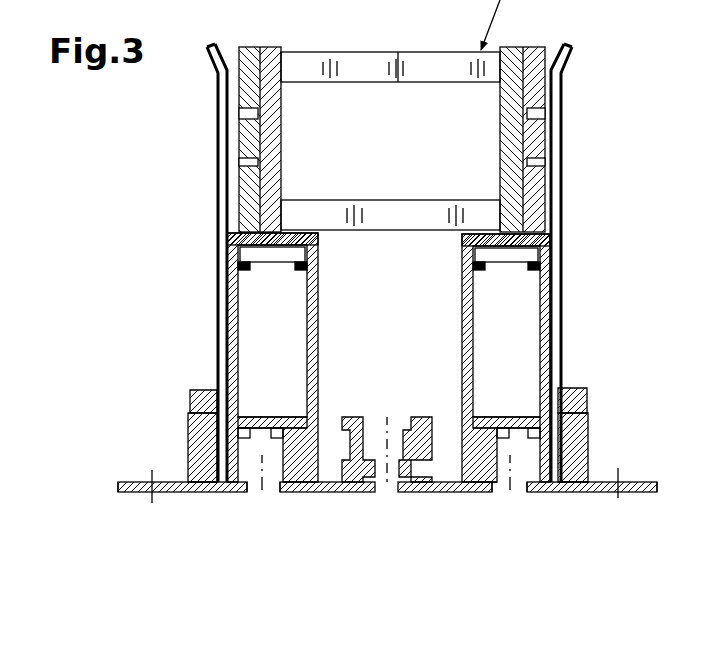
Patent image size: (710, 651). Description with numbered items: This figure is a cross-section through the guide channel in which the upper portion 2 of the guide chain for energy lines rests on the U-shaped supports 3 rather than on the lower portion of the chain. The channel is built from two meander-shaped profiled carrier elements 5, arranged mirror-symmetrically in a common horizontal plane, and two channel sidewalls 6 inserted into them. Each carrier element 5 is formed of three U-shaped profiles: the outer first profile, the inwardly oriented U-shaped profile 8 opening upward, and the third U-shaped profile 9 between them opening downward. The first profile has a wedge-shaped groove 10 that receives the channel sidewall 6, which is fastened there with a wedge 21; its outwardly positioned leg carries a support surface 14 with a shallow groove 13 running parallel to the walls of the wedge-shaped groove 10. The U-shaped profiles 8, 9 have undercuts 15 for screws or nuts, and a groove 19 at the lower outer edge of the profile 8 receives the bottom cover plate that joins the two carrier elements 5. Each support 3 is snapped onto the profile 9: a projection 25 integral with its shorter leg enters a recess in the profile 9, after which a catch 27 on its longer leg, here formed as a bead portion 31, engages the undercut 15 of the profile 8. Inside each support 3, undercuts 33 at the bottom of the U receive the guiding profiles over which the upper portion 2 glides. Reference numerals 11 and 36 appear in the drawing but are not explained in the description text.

The upper portion 2 is at (390, 66).
The support 3 is at (218, 282).
The profiled carrier element 5 is at (168, 497).
The channel sidewall 6 is at (214, 135).
The U-shaped profile 8 is at (347, 412).
The U-shaped profile 9 is at (272, 495).
The wedge-shaped groove 10 is at (206, 472).
The support 11 is at (190, 470).
The shallow groove 13 is at (152, 478).
The support surface 14 is at (123, 493).
The undercut 15 is at (343, 448).
The groove 19 is at (387, 486).
The wedge 21 is at (193, 390).
The projection 25 is at (243, 420).
The catch 27 is at (320, 470).
The bead portion 31 is at (302, 432).
The undercut 33 is at (318, 253).
The flange 36 is at (286, 230).